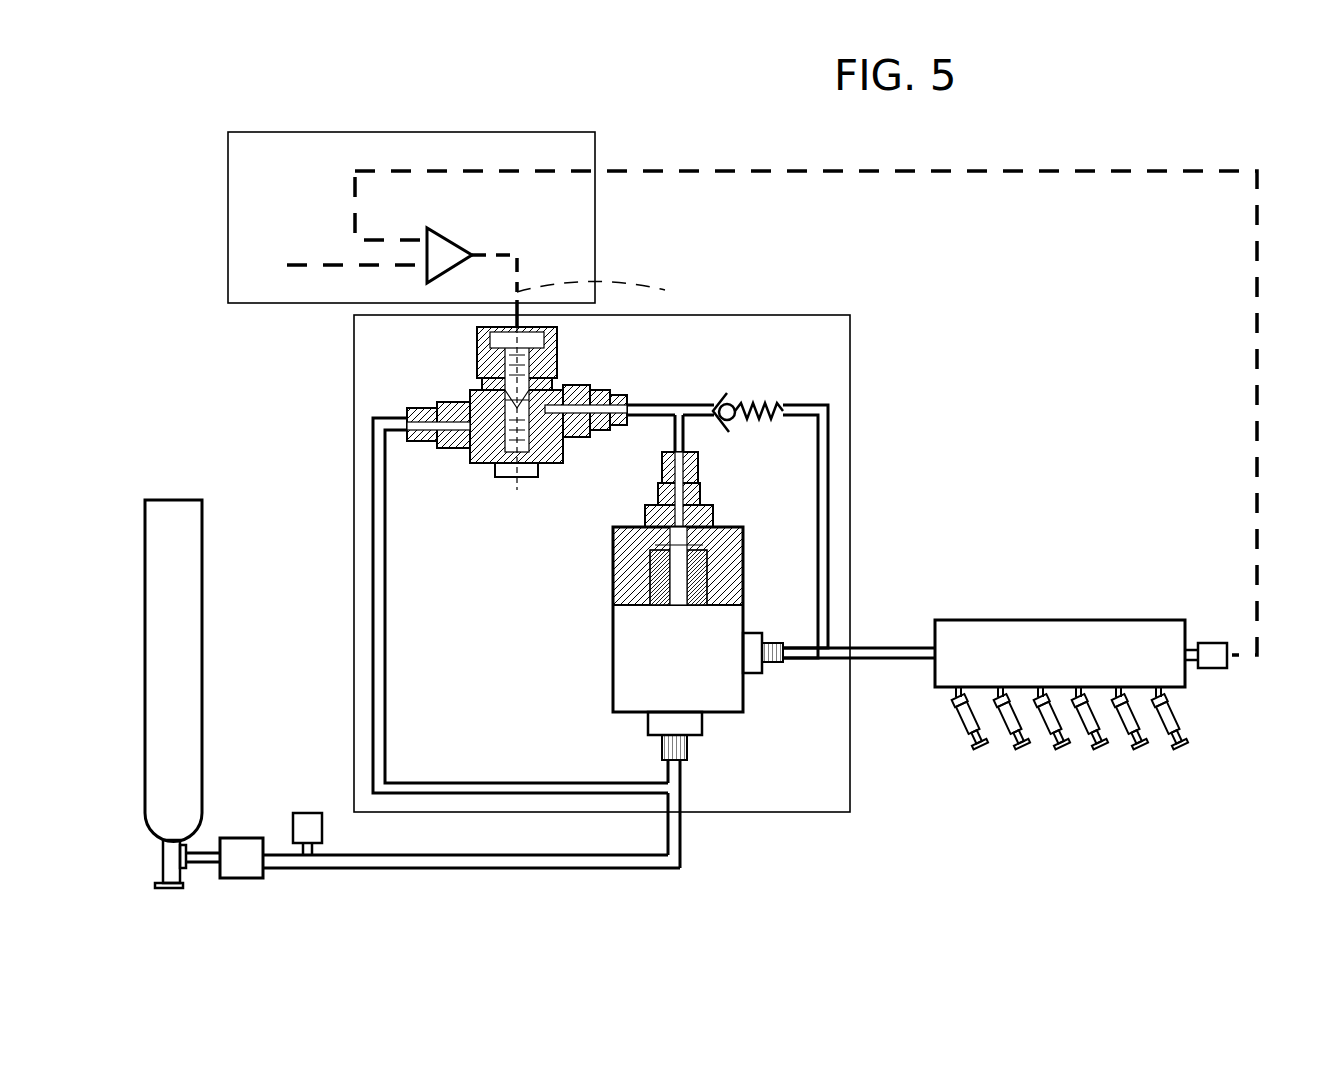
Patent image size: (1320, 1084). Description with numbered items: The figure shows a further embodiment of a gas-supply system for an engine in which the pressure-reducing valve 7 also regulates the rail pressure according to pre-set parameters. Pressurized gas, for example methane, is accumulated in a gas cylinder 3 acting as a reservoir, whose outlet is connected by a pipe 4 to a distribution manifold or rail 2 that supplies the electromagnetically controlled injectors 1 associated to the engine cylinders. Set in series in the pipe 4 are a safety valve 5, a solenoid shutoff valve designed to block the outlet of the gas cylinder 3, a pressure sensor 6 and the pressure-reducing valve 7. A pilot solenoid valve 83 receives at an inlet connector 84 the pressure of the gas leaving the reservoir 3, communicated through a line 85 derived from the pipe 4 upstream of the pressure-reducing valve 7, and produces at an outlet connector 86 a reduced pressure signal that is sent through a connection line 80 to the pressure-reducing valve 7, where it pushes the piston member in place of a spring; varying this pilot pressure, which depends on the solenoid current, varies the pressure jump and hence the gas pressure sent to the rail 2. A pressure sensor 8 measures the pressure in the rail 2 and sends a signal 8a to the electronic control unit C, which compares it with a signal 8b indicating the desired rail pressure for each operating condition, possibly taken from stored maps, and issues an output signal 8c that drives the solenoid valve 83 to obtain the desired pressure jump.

The injectors 1 is at (1050, 738).
The rail 2 is at (1012, 620).
The gas cylinder 3 is at (202, 613).
The pipe 4 is at (459, 872).
The safety valve 5 is at (262, 879).
The pressure sensor 6 is at (311, 813).
The pressure-reducing valve 7 is at (578, 601).
The pressure sensor 8 is at (1206, 643).
The signal 8a is at (799, 190).
The signal 8b is at (352, 274).
The output signal 8c is at (609, 279).
The electronic control unit C is at (578, 240).
The connection line 80 is at (685, 460).
The pilot solenoid valve 83 is at (571, 416).
The inlet connector 84 is at (432, 448).
The line 85 is at (388, 686).
The outlet connector 86 is at (625, 437).